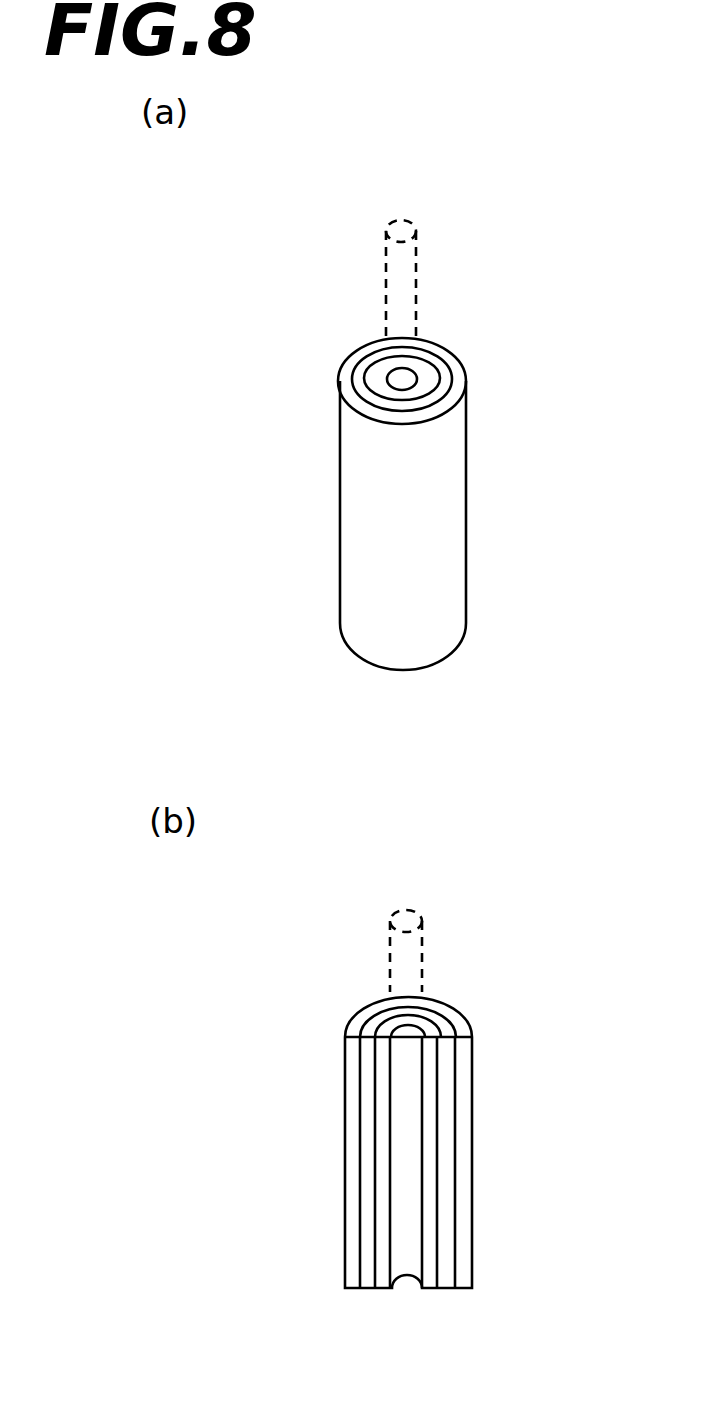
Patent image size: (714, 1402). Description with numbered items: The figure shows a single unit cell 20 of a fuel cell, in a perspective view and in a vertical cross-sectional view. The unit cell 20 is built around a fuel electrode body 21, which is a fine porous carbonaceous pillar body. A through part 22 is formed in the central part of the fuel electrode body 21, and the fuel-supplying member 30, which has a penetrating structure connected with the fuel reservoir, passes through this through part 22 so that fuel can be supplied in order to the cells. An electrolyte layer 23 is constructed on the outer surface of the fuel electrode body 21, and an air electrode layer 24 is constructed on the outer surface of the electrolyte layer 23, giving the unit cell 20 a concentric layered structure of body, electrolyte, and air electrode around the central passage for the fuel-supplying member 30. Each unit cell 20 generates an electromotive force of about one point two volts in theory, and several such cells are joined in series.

The unit cell 20 is at (468, 543).
The fuel electrode body 21 is at (423, 375).
The through part 22 is at (398, 373).
The electrolyte layer 23 is at (443, 382).
The air electrode layer 24 is at (452, 393).
The fuel-supplying member 30 is at (407, 250).